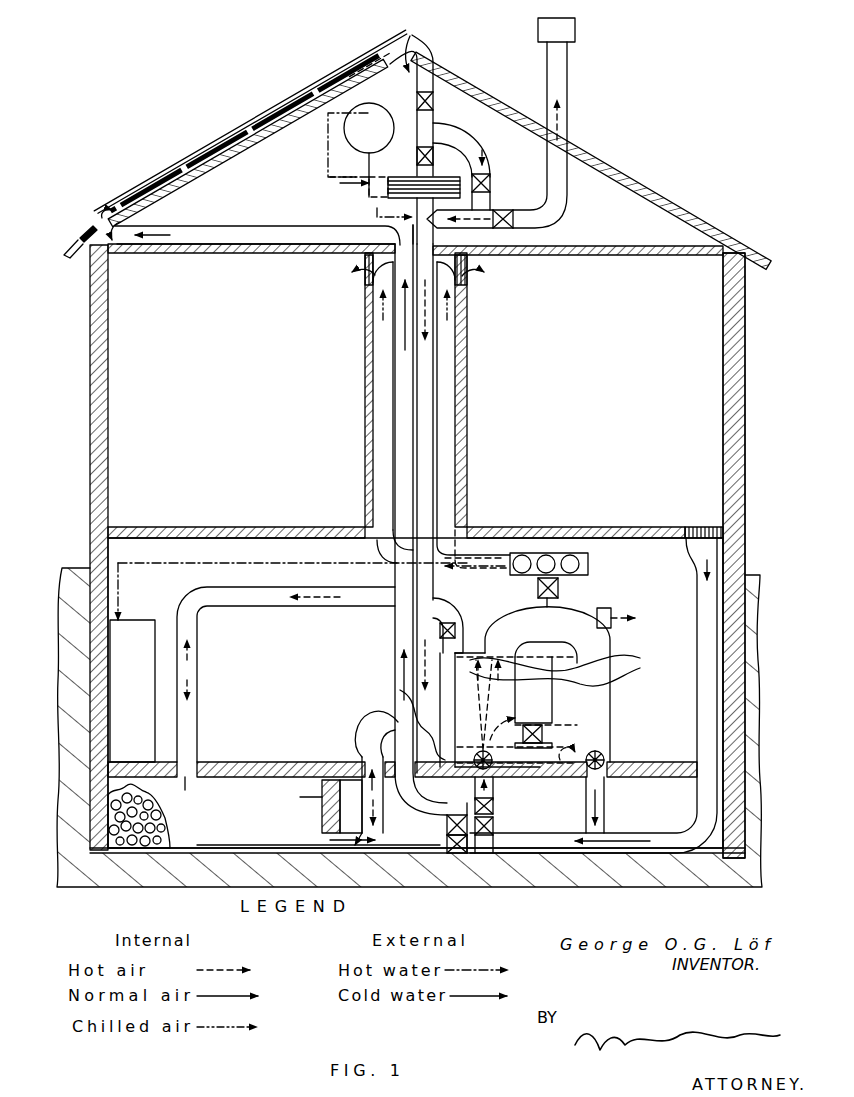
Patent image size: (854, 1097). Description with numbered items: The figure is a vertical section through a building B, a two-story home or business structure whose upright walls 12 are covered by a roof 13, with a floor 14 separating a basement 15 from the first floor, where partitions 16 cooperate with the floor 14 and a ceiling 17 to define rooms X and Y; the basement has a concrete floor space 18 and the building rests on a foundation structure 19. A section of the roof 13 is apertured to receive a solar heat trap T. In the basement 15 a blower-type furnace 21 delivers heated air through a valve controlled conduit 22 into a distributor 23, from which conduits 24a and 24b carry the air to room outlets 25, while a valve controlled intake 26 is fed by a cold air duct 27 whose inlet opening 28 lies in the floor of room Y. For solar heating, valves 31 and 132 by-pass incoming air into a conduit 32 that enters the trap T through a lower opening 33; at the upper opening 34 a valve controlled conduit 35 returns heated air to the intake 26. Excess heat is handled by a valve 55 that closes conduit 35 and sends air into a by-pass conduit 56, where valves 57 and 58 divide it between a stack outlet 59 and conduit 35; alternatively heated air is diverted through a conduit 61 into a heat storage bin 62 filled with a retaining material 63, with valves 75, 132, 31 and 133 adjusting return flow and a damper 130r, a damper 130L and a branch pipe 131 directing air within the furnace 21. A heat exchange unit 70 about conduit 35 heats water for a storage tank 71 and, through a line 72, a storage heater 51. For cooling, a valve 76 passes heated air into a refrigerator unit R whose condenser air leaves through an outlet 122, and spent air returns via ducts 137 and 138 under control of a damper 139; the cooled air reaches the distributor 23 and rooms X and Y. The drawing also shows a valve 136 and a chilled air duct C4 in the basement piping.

The upright walls 12 is at (108, 353).
The roof 13 is at (622, 170).
The floor 14 is at (555, 527).
The basement 15 is at (415, 693).
The partitions 16 is at (365, 439).
The ceiling 17 is at (570, 256).
The floor space 18 is at (236, 848).
The foundation structure 19 is at (745, 718).
The furnace 21 is at (516, 710).
The valve controlled conduit 22 is at (538, 595).
The distributor 23 is at (588, 557).
The conduit 24a is at (375, 548).
The conduit 24b is at (467, 508).
The room outlets 25 is at (352, 275).
The valve controlled intake 26 is at (493, 783).
The cold air duct 27 is at (692, 830).
The inlet opening 28 is at (694, 527).
The valve 31 is at (447, 825).
The conduit 32 is at (233, 226).
The opening 33 is at (98, 223).
The opening 34 is at (409, 45).
The valve controlled conduit 35 is at (435, 104).
The storage heater 51 is at (132, 691).
The valve 55 is at (417, 153).
The by-pass conduit 56 is at (485, 148).
The valve 57 is at (490, 181).
The valve 58 is at (510, 211).
The stack outlet 59 is at (567, 96).
The conduit 61 is at (342, 609).
The heat storage bin 62 is at (402, 786).
The heat absorbing and retaining material 63 is at (172, 832).
The heat exchange unit 70 is at (405, 174).
The storage tank 71 is at (361, 150).
The line 72 is at (377, 208).
The valve 75 is at (596, 833).
The valve 76 is at (532, 725).
The outlet 122 is at (606, 608).
The damper 130r is at (600, 660).
The damper 130L is at (598, 680).
The branch pipe 131 is at (440, 632).
The valve 132 is at (493, 826).
The valve 133 is at (450, 845).
The damper 136 is at (493, 806).
The duct 137 is at (400, 690).
The duct 138 is at (322, 806).
The damper 139 is at (362, 752).
The building B is at (745, 392).
The heat trap T is at (152, 185).
The refrigerator unit R is at (612, 718).
The room X is at (215, 375).
The room Y is at (582, 377).
The chilled air duct C4 is at (195, 760).